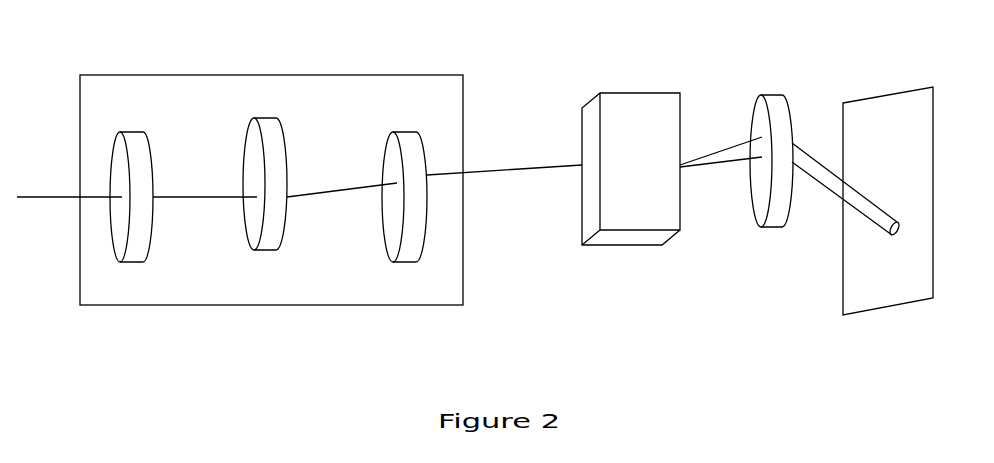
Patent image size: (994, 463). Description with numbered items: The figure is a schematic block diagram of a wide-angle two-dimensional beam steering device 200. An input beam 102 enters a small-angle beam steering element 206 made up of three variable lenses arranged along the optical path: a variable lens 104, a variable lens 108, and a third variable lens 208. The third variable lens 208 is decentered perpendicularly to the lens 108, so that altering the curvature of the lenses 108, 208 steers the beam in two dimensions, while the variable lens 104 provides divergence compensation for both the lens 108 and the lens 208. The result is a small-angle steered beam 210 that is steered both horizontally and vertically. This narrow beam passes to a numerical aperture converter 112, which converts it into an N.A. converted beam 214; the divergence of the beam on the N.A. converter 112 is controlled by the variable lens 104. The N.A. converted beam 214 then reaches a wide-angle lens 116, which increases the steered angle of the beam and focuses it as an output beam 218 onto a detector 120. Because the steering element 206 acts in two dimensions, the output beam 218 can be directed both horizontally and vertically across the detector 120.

The wide-angle 2D beam steering device 200 is at (540, 47).
The input beam 102 is at (69, 216).
The variable lens 104 is at (129, 176).
The variable lens 108 is at (265, 167).
The third variable lens 208 is at (404, 177).
The small-angle beam steering element 206 is at (271, 190).
The small-angle steered beam 210 is at (504, 186).
The N.A. converter 112 is at (631, 169).
The N.A. converted beam 214 is at (721, 168).
The wide-angle lens 116 is at (774, 141).
The detector 120 is at (888, 201).
The output beam 218 is at (847, 211).